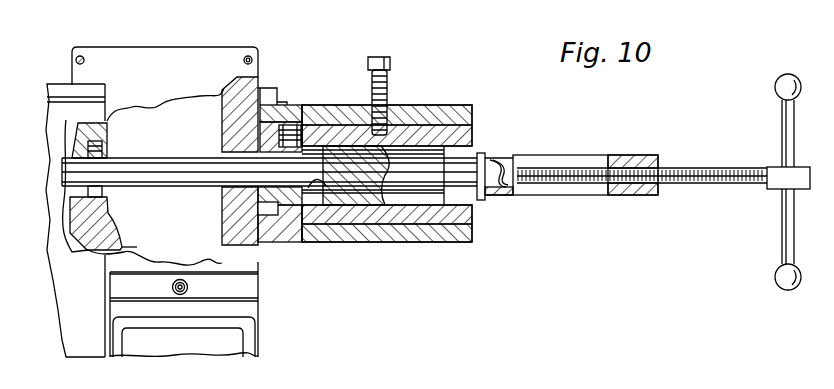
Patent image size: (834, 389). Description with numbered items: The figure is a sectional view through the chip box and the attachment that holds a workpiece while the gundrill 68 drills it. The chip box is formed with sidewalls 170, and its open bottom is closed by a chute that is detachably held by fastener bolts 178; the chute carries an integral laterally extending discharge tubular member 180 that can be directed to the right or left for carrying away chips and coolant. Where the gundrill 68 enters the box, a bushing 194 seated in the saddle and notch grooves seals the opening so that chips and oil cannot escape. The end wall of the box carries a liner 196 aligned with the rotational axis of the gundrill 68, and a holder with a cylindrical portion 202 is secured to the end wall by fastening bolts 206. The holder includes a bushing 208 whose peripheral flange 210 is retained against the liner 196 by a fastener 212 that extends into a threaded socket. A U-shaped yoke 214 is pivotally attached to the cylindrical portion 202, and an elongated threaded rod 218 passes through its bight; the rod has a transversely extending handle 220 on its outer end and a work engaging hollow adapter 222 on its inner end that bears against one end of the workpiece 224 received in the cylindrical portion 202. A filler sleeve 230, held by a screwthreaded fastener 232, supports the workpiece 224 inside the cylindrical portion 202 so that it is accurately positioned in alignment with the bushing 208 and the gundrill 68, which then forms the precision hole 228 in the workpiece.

The gundrill 68 is at (170, 188).
The sidewalls 170 is at (186, 60).
The fastener bolts 178 is at (250, 292).
The discharge tubular member 180 is at (247, 343).
The bushing 194 is at (95, 147).
The liner 196 is at (235, 142).
The cylindrical portion 202 is at (423, 112).
The fastening bolts 206 is at (283, 101).
The bushing 208 is at (228, 193).
The peripheral flange 210 is at (280, 210).
The fastener 212 is at (292, 127).
The U-shaped yoke 214 is at (636, 156).
The threaded rod 218 is at (700, 185).
The handle 220 is at (785, 243).
The hollow adapter 222 is at (504, 188).
The workpiece 224 is at (441, 163).
The hole 228 is at (324, 186).
The filler sleeve 230 is at (421, 216).
The screwthreaded fastener 232 is at (386, 90).